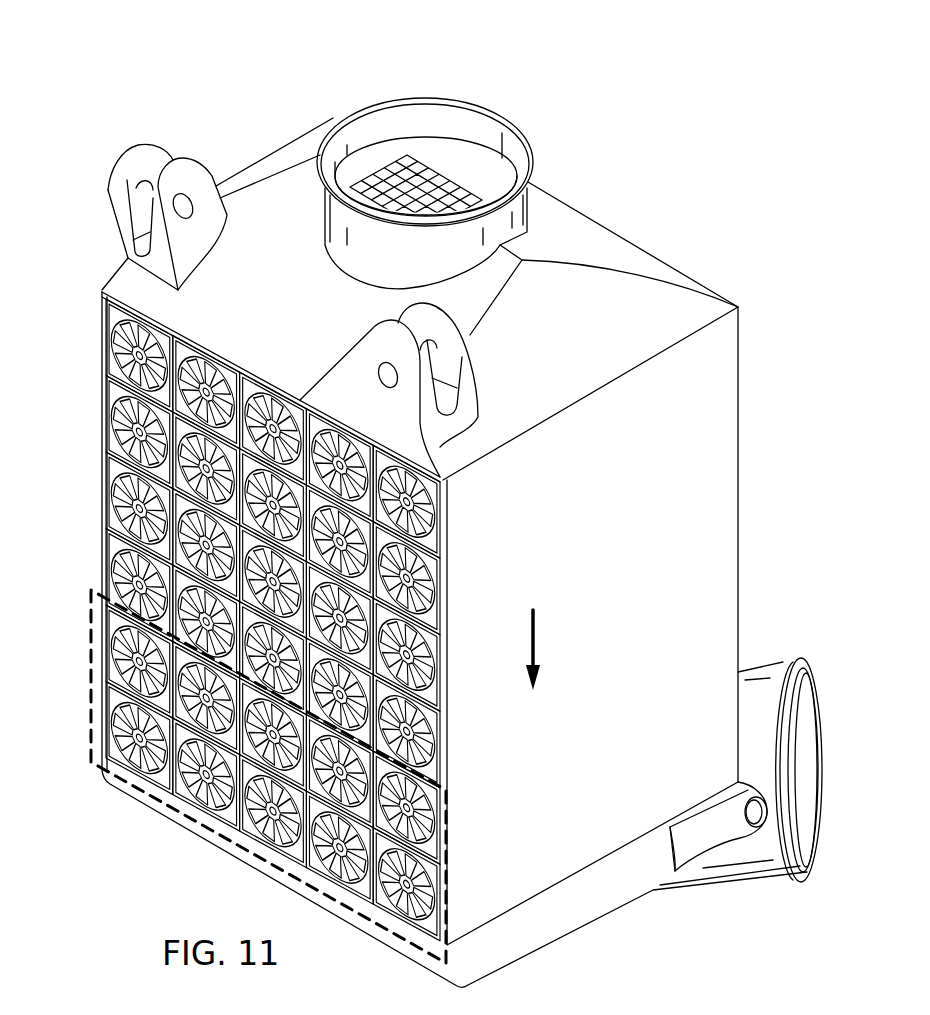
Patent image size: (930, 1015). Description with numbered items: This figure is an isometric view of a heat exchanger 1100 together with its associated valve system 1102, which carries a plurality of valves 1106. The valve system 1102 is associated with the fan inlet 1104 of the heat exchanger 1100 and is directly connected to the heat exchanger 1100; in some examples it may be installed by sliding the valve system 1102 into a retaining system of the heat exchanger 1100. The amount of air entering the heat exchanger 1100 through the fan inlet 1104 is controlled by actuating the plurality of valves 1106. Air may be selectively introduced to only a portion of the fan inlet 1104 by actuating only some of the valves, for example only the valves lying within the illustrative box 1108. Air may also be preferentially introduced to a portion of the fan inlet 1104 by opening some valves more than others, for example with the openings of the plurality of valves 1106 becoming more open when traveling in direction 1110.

The heat exchanger 1100 is at (204, 58).
The valve system 1102 is at (74, 354).
The fan inlet 1104 is at (250, 349).
The plurality of valves 1106 is at (279, 747).
The illustrative box 1108 is at (460, 851).
The direction 1110 is at (536, 634).